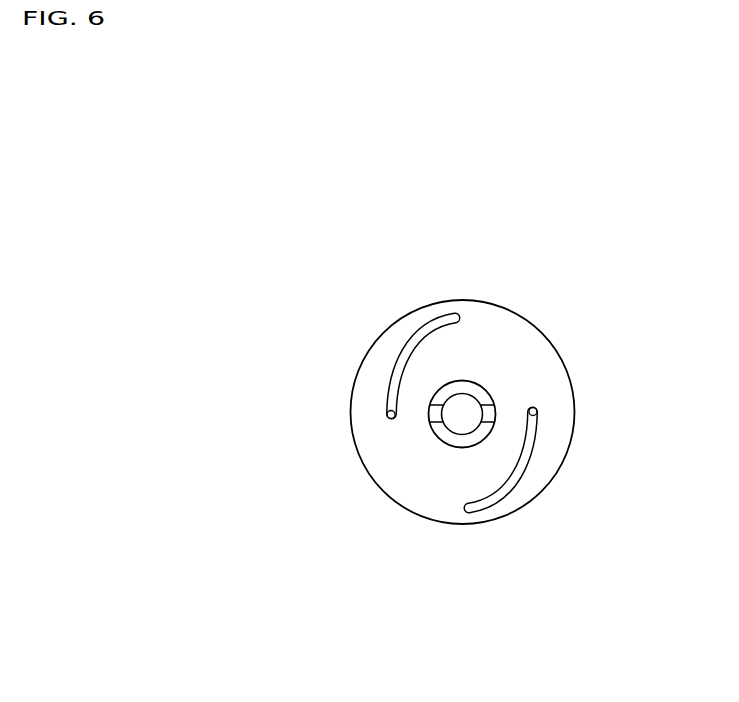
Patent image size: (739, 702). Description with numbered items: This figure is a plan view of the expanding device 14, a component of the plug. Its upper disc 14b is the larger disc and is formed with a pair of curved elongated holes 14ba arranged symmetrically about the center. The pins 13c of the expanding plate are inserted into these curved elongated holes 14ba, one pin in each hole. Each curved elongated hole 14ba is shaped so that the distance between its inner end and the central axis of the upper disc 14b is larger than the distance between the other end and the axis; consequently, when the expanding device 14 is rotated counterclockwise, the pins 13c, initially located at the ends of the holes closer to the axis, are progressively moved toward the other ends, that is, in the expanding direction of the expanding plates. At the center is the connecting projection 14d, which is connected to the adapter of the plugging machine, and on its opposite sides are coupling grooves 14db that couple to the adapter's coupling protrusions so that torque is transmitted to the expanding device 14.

The expanding device 14 is at (463, 410).
The upper disc 14b is at (373, 460).
The curved elongated holes 14ba is at (430, 327).
The connecting projection 14d is at (492, 431).
The coupling grooves 14db is at (493, 408).
The pins 13c is at (388, 414).